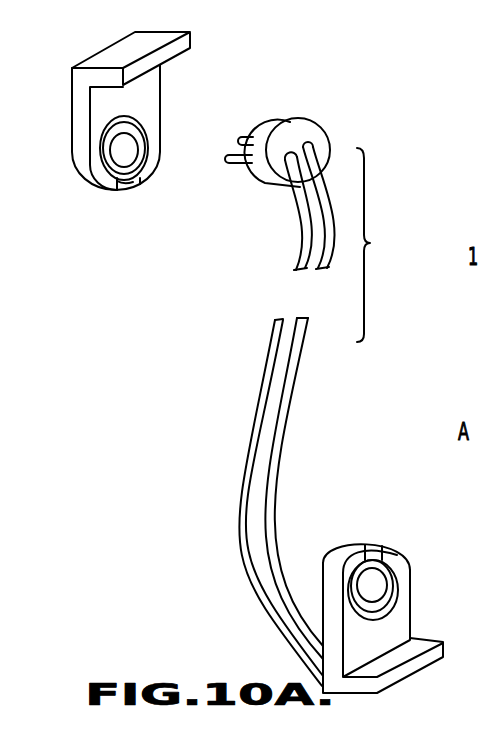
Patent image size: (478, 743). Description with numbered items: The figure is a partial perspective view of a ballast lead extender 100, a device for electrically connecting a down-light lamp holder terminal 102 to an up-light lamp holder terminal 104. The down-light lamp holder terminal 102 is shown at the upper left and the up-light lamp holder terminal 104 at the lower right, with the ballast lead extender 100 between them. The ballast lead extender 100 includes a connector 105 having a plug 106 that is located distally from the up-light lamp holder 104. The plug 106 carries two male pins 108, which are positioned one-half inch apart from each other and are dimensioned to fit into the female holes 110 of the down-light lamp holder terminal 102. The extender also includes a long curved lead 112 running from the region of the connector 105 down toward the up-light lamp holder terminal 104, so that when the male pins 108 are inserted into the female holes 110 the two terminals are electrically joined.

The ballast lead extender 100 is at (403, 173).
The down-light lamp holder terminal 102 is at (102, 53).
The up-light lamp holder terminal 104 is at (397, 547).
The connector 105 is at (270, 200).
The plug 106 is at (292, 113).
The male pins 108 is at (227, 165).
The female holes 110 is at (138, 175).
The light pipe tube 112 is at (282, 380).